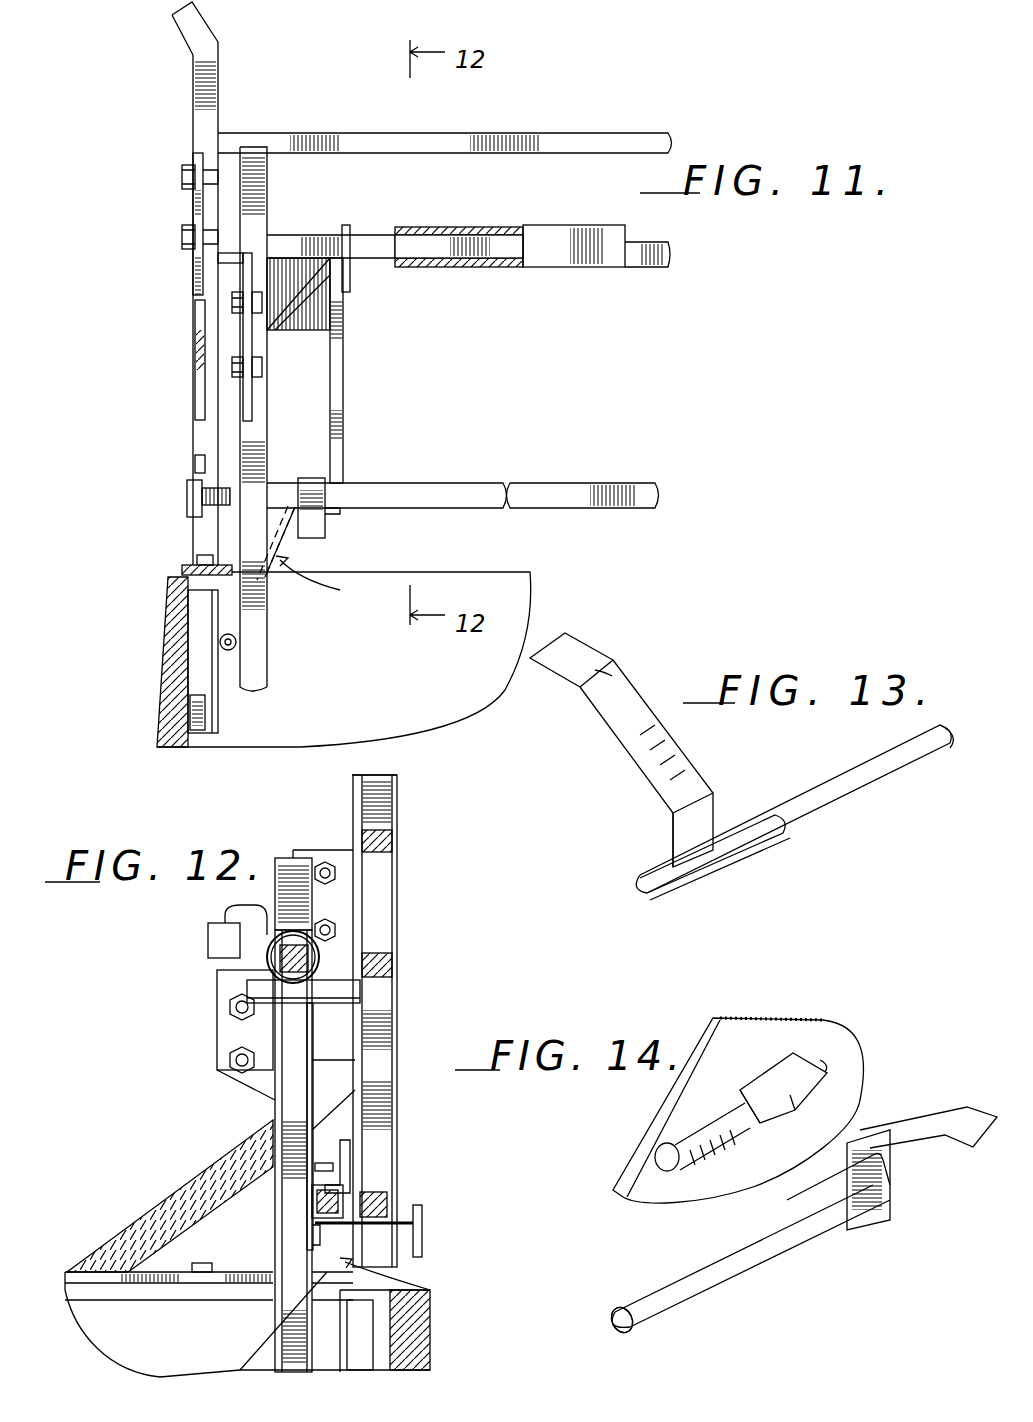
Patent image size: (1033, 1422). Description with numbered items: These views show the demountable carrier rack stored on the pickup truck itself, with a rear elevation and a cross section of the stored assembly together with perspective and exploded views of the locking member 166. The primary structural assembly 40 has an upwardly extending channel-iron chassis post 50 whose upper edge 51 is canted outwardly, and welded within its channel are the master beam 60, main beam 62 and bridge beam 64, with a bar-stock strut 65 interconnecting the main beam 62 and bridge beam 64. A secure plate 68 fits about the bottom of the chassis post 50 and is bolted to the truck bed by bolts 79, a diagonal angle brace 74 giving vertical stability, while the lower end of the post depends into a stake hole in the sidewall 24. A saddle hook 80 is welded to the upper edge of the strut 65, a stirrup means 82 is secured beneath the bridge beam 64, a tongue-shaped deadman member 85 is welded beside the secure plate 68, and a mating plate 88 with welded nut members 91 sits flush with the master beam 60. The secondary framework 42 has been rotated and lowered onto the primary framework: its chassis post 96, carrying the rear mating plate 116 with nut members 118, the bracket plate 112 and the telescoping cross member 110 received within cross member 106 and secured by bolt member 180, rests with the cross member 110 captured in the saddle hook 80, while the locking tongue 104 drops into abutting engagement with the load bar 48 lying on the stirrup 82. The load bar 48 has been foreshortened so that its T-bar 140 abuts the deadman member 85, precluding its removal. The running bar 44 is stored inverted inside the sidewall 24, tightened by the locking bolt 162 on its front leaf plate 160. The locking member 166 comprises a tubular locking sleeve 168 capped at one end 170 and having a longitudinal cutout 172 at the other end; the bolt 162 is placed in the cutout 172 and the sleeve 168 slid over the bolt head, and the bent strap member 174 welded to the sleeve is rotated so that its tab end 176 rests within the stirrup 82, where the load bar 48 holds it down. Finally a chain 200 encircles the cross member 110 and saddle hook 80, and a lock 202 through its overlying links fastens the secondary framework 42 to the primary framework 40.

In FIG. 11, the sidewall 24 is at (172, 620).
In FIG. 12, the sidewall 24 is at (388, 1330).
In FIG. 12, the primary structural assembly 40 is at (407, 822).
In FIG. 12, the secondary framework 42 is at (262, 1130).
In FIG. 11, the running bar 44 is at (190, 690).
In FIG. 11, the load bar 48 is at (476, 473).
In FIG. 12, the load bar 48 is at (335, 1195).
In FIG. 11, the chassis post 50 is at (205, 92).
In FIG. 12, the chassis post 50 is at (392, 1026).
In FIG. 11, the upper edge 51 is at (185, 26).
In FIG. 11, the master beam 60 is at (545, 133).
In FIG. 12, the master beam 60 is at (392, 843).
In FIG. 11, the main beam 62 is at (648, 245).
In FIG. 12, the main beam 62 is at (392, 960).
In FIG. 11, the bridge beam 64 is at (600, 483).
In FIG. 12, the bridge beam 64 is at (387, 1197).
In FIG. 11, the strut 65 is at (343, 365).
In FIG. 11, the secure plate 68 is at (182, 568).
In FIG. 12, the secure plate 68 is at (105, 1272).
In FIG. 11, the angle brace 74 is at (195, 385).
In FIG. 12, the angle brace 74 is at (185, 1192).
In FIG. 11, the bolt 79 is at (200, 555).
In FIG. 12, the bolt 79 is at (200, 1263).
In FIG. 11, the saddle hook 80 is at (350, 232).
In FIG. 12, the saddle hook 80 is at (335, 1003).
In FIG. 11, the stirrup means 82 is at (310, 480).
In FIG. 12, the stirrup means 82 is at (400, 1230).
In FIG. 11, the deadman member 85 is at (187, 498).
In FIG. 11, the mating plate 88 is at (195, 205).
In FIG. 12, the mating plate 88 is at (345, 858).
In FIG. 11, the nut member 91 is at (210, 172).
In FIG. 12, the nut member 91 is at (336, 928).
In FIG. 11, the chassis post 96 is at (258, 192).
In FIG. 12, the chassis post 96 is at (290, 1097).
In FIG. 12, the locking tongue 104 is at (350, 1150).
In FIG. 11, the cross member 106 is at (550, 232).
In FIG. 12, the cross member 106 is at (310, 950).
In FIG. 11, the cross member 110 is at (385, 240).
In FIG. 12, the cross member 110 is at (320, 991).
In FIG. 11, the bracket plate 112 is at (305, 305).
In FIG. 11, the rear mating plate 116 is at (240, 333).
In FIG. 12, the rear mating plate 116 is at (222, 991).
In FIG. 11, the nut member 118 is at (258, 368).
In FIG. 12, the nut member 118 is at (230, 1058).
In FIG. 11, the T-bar 140 is at (195, 462).
In FIG. 12, the T-bar 140 is at (318, 1166).
In FIG. 11, the front leaf plate 160 is at (210, 712).
In FIG. 13, the front leaf plate 160 is at (632, 688).
In FIG. 14, the front leaf plate 160 is at (790, 1020).
In FIG. 14, the locking bolt 162 is at (680, 1140).
In FIG. 11, the locking member 166 is at (327, 581).
In FIG. 12, the locking member 166 is at (412, 1280).
In FIG. 13, the locking sleeve 168 is at (810, 800).
In FIG. 14, the locking sleeve 168 is at (603, 1200).
In FIG. 13, the end 170 is at (930, 725).
In FIG. 14, the end 170 is at (612, 1328).
In FIG. 11, the cutout 172 is at (236, 652).
In FIG. 13, the cutout 172 is at (725, 880).
In FIG. 14, the cutout 172 is at (800, 1210).
In FIG. 11, the strap member 174 is at (285, 540).
In FIG. 12, the strap member 174 is at (272, 1311).
In FIG. 13, the strap member 174 is at (640, 762).
In FIG. 14, the strap member 174 is at (908, 1137).
In FIG. 11, the tab end 176 is at (338, 512).
In FIG. 12, the tab end 176 is at (312, 1236).
In FIG. 13, the tab end 176 is at (590, 655).
In FIG. 14, the tab end 176 is at (975, 1113).
In FIG. 14, the bolt member 180 is at (810, 1075).
In FIG. 12, the chain 200 is at (290, 935).
In FIG. 12, the lock 202 is at (208, 943).